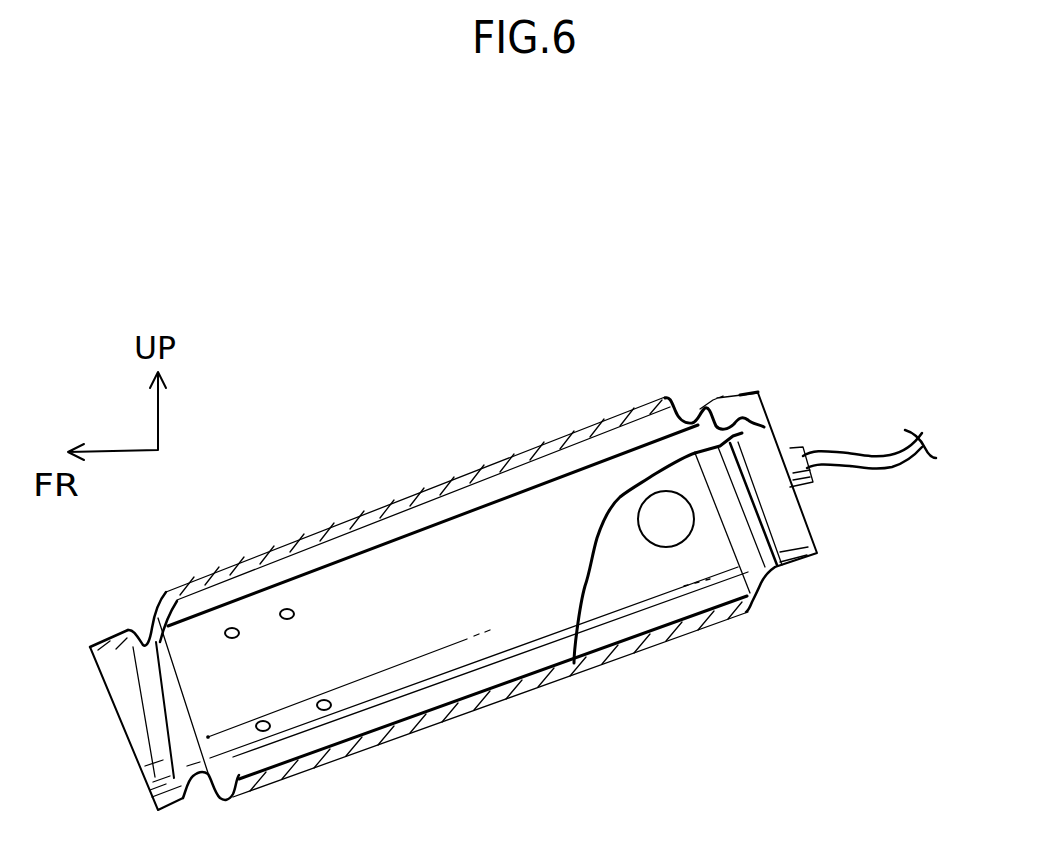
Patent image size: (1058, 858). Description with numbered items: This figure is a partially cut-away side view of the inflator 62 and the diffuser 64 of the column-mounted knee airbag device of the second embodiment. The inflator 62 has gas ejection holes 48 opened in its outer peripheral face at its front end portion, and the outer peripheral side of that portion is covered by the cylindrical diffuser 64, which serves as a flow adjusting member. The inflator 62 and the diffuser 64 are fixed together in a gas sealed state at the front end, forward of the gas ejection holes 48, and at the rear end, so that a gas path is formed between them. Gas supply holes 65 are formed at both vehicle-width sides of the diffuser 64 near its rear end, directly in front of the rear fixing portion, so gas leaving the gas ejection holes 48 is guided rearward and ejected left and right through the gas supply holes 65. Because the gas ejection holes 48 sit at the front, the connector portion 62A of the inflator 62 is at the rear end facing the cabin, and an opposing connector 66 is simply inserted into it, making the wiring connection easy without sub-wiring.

The gas ejection holes 48 is at (233, 627).
The inflator 62 is at (562, 466).
The connector portion 62A is at (743, 392).
The diffuser 64 is at (600, 572).
The gas supply holes 65 is at (667, 540).
The opposing connector 66 is at (801, 458).